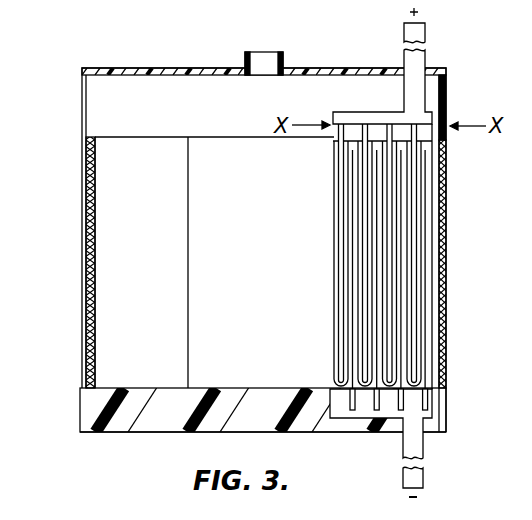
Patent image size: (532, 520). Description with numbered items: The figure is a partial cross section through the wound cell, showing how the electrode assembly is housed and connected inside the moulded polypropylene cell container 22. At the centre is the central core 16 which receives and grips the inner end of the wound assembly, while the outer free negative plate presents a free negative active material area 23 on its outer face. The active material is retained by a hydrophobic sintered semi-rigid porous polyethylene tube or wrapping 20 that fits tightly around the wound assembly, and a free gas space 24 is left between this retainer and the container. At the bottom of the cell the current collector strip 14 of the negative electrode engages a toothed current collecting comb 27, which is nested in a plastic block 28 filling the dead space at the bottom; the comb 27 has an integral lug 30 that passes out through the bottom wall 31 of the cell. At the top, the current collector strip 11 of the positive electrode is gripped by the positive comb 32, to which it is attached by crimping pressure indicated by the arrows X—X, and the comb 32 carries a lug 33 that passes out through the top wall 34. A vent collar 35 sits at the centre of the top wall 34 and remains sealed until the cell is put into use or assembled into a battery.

The current collector strip 11 is at (343, 128).
The current collector strip 14 is at (349, 410).
The central core 16 is at (189, 268).
The porous polyethylene tube or wrapping 20 is at (95, 276).
The cell container 22 is at (82, 100).
The free negative active material area 23 is at (86, 286).
The free gas space 24 is at (126, 98).
The toothed current collecting comb 27 is at (379, 418).
The plastic block 28 is at (150, 415).
The lug 30 is at (423, 445).
The bottom wall 31 is at (105, 432).
The positive comb 32 is at (383, 112).
The lug 33 is at (425, 58).
The top wall 34 is at (184, 68).
The vent collar 35 is at (283, 62).